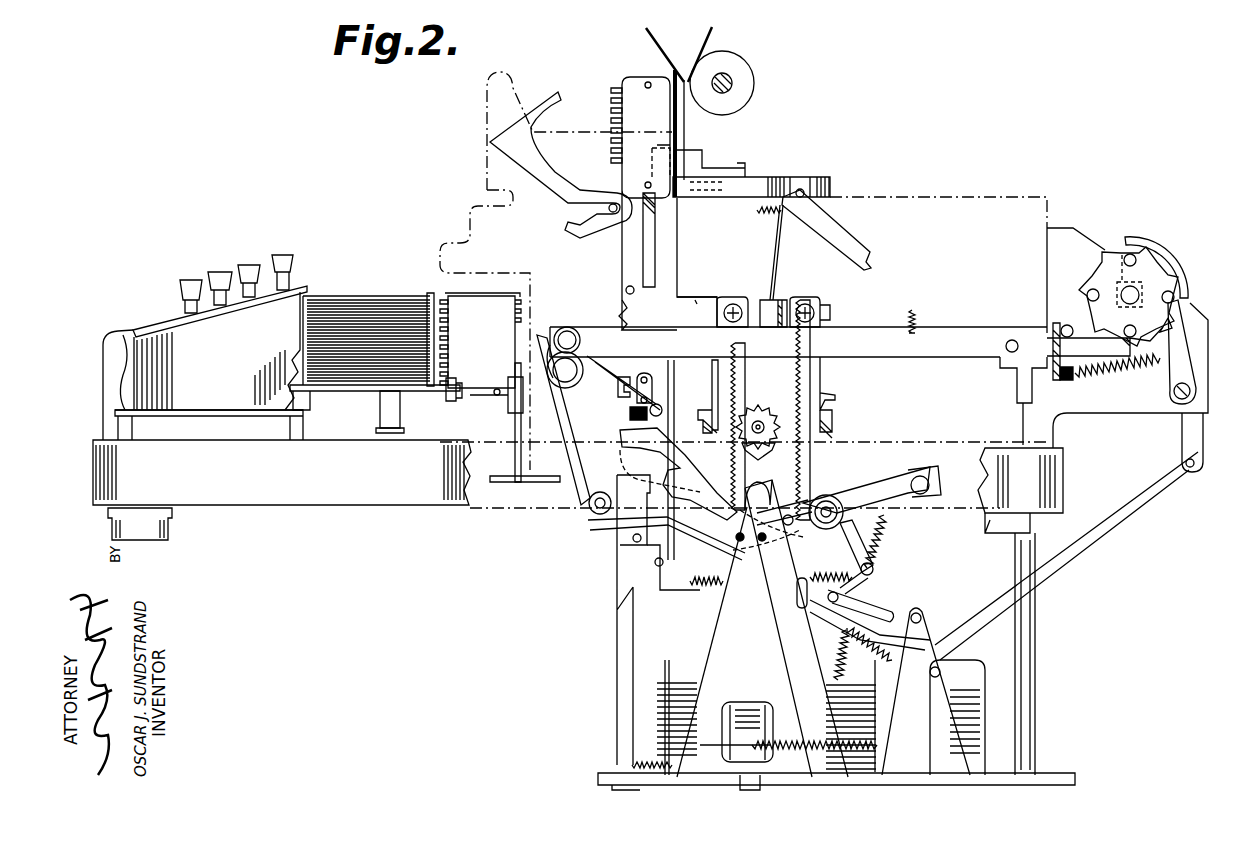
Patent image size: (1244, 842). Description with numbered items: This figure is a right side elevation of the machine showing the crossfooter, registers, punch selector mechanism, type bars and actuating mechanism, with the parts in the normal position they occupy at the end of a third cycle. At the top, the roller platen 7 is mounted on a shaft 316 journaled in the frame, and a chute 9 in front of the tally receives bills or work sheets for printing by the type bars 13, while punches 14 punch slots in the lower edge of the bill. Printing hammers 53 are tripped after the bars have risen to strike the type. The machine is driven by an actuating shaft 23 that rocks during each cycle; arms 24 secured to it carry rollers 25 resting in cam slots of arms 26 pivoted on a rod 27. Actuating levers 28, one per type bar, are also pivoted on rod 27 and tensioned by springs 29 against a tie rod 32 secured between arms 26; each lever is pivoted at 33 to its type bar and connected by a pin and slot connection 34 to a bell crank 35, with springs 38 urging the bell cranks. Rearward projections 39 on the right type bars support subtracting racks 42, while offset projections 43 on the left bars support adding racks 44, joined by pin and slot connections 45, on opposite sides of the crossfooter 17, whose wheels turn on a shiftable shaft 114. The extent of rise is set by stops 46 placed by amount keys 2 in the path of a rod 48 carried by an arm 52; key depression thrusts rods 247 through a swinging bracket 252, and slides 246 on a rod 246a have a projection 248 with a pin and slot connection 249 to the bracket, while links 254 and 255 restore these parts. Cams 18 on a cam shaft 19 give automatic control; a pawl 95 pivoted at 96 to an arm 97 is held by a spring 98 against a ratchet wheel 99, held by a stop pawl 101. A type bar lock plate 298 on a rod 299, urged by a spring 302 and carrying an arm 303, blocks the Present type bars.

The amount keys 2 is at (281, 256).
The roller platen 7 is at (755, 90).
The chute 9 is at (641, 53).
The type bars 13 is at (622, 250).
The punches 14 is at (703, 177).
The crossfooter 17 is at (771, 414).
The cams 18 is at (1170, 232).
The cam shaft 19 is at (1178, 281).
The actuating shaft 23 is at (556, 346).
The arms 24 is at (566, 413).
The rollers 25 is at (589, 513).
The arms 26 is at (692, 474).
The rod 27 is at (829, 497).
The actuating levers 28 is at (870, 490).
The springs 29 is at (840, 582).
The tie rod 32 is at (742, 550).
The pivot 33 is at (661, 578).
The pin and slot connection 34 is at (921, 494).
The bell crank 35 is at (870, 575).
The springs 38 is at (880, 542).
The rearward projections 39 is at (704, 305).
The subtracting racks 42 is at (716, 385).
The offset projections 43 is at (790, 318).
The adding racks 44 is at (818, 376).
The pin and slot connections 45 is at (747, 318).
The stops 46 is at (521, 312).
The rod 48 is at (513, 463).
The arm 52 is at (560, 482).
The hammers 53 is at (551, 179).
The pawl 95 is at (886, 356).
The pivot 96 is at (569, 330).
The arm 97 is at (582, 376).
The spring 98 is at (909, 322).
The ratchet wheel 99 is at (1164, 266).
The stop pawl 101 is at (1180, 348).
The shaft 114 is at (762, 449).
The slides 246 is at (491, 400).
The rod 246a is at (498, 387).
The rods 247 is at (385, 297).
The projection 248 is at (462, 400).
The pin and slot connection 249 is at (440, 396).
The swinging bracket 252 is at (372, 391).
The link 254 is at (378, 419).
The link 255 is at (394, 427).
The type bar lock plate 298 is at (777, 266).
The rod 299 is at (801, 192).
The spring 302 is at (775, 216).
The arm 303 is at (838, 240).
The shaft 316 is at (731, 80).